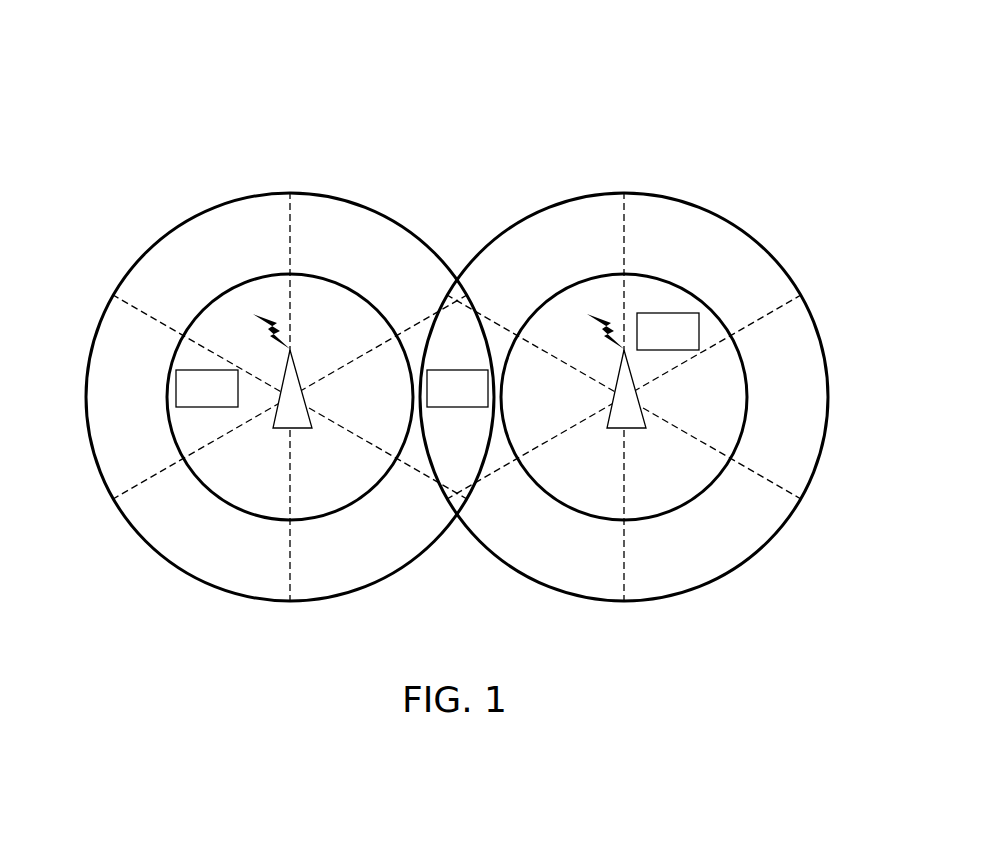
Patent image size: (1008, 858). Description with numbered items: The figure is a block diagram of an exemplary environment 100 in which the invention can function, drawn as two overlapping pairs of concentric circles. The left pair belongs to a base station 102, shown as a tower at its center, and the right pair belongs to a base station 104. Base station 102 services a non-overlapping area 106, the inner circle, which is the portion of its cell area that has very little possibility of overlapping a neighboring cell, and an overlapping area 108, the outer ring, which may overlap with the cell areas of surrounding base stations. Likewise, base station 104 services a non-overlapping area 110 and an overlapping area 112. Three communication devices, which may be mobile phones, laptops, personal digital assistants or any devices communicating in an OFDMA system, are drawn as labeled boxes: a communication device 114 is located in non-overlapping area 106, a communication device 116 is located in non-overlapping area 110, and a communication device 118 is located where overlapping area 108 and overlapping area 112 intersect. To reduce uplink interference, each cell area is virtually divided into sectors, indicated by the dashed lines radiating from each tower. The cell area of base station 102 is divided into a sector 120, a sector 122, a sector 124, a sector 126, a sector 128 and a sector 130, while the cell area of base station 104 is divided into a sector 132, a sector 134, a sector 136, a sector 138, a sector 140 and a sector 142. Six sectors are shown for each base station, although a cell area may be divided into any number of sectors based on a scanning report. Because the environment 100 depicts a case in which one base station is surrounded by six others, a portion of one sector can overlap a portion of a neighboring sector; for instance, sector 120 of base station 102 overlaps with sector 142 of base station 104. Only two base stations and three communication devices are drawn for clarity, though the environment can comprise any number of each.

The environment 100 is at (300, 78).
The base station 102 is at (318, 430).
The base station 104 is at (652, 430).
The non-overlapping area 106 is at (350, 287).
The overlapping area 108 is at (368, 215).
The non-overlapping area 110 is at (696, 291).
The overlapping area 112 is at (732, 215).
The communication device 114 is at (207, 388).
The communication device 116 is at (668, 331).
The communication device 118 is at (457, 388).
The sector 120 is at (420, 300).
The sector 122 is at (319, 199).
The sector 124 is at (196, 232).
The sector 126 is at (87, 402).
The sector 128 is at (190, 560).
The sector 130 is at (400, 560).
The sector 132 is at (532, 572).
The sector 134 is at (727, 560).
The sector 136 is at (830, 382).
The sector 138 is at (772, 272).
The sector 140 is at (580, 207).
The sector 142 is at (492, 305).